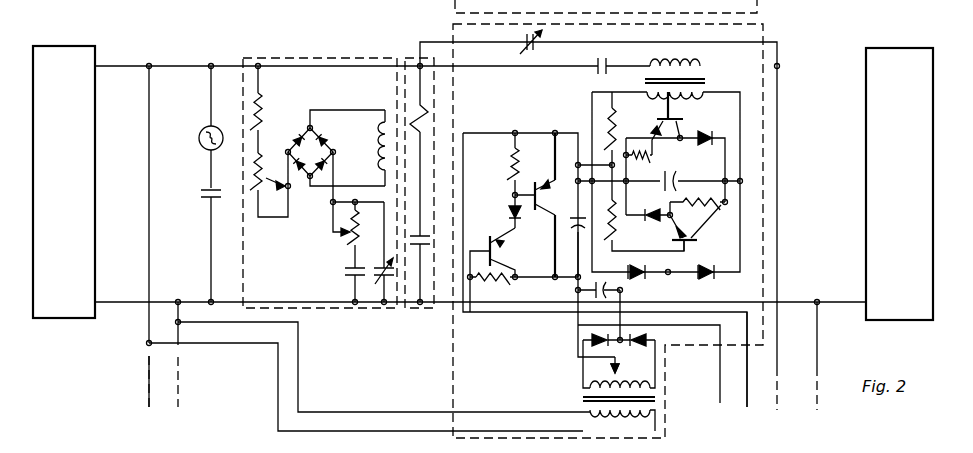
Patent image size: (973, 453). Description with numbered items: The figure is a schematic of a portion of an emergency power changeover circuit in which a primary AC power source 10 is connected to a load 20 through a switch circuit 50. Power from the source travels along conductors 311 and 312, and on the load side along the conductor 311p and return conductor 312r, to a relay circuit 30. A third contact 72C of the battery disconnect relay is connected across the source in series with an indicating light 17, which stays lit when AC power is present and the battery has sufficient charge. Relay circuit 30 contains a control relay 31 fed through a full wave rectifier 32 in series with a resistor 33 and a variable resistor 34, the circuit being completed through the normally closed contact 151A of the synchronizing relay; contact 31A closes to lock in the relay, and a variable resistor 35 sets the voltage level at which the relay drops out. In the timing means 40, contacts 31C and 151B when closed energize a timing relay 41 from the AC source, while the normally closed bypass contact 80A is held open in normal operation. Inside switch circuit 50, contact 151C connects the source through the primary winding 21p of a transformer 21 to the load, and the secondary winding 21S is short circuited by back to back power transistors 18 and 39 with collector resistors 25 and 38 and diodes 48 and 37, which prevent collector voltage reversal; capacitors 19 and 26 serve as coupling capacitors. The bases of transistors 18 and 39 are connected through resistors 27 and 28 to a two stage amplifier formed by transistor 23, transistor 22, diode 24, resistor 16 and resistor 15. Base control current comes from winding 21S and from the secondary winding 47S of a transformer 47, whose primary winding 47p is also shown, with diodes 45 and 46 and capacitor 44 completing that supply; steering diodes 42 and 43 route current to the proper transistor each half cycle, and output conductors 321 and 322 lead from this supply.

The primary AC power source 10 is at (80, 46).
The load 20 is at (906, 48).
The conductor 311 is at (140, 70).
The conductor 312 is at (118, 303).
The conductor 311' 311p is at (815, 67).
The conductor 312r is at (819, 350).
The indicating light 17 is at (200, 131).
The third contact 72C is at (206, 200).
The relay circuit 30 is at (297, 58).
The resistor 33 is at (262, 100).
The variable resistor 34 is at (270, 181).
The full wave rectifier 32 is at (296, 136).
The control relay 31 is at (376, 140).
The contact 31C is at (414, 190).
The variable resistor 35 is at (346, 236).
The contact 31A is at (346, 274).
The normally closed contact 151A is at (388, 282).
The timing means 40 is at (411, 58).
The timing relay 41 is at (430, 110).
The normally closed contact 80A is at (536, 44).
The switch circuit 50 is at (766, 30).
The contact 151C is at (598, 72).
The transformer 21 is at (645, 80).
The primary winding 21p is at (702, 62).
The secondary winding 21S is at (696, 96).
The resistor 27 is at (600, 128).
The resistor 28 is at (618, 232).
The power transistor 18 is at (656, 126).
The collector resistor 25 is at (652, 176).
The capacitor 19 is at (678, 176).
The diode 48 is at (715, 135).
The diode 37 is at (656, 209).
The collector resistor 38 is at (696, 222).
The power transistor 39 is at (698, 241).
The steering diode 42 is at (642, 282).
The steering diode 43 is at (716, 278).
The resistor 16 is at (512, 168).
The transistor 22 is at (525, 164).
The contact 151B is at (510, 220).
The capacitor 26 is at (572, 216).
The diode 24 is at (517, 223).
The transistor 23 is at (502, 262).
The resistor 15 is at (495, 282).
The capacitor 44 is at (592, 300).
The diode 45 is at (590, 342).
The diode 46 is at (650, 340).
The transformer 47 is at (583, 398).
The secondary winding 47S is at (645, 388).
The primary winding 47p is at (645, 416).
The output line 322 is at (716, 360).
The output line 321 is at (745, 370).